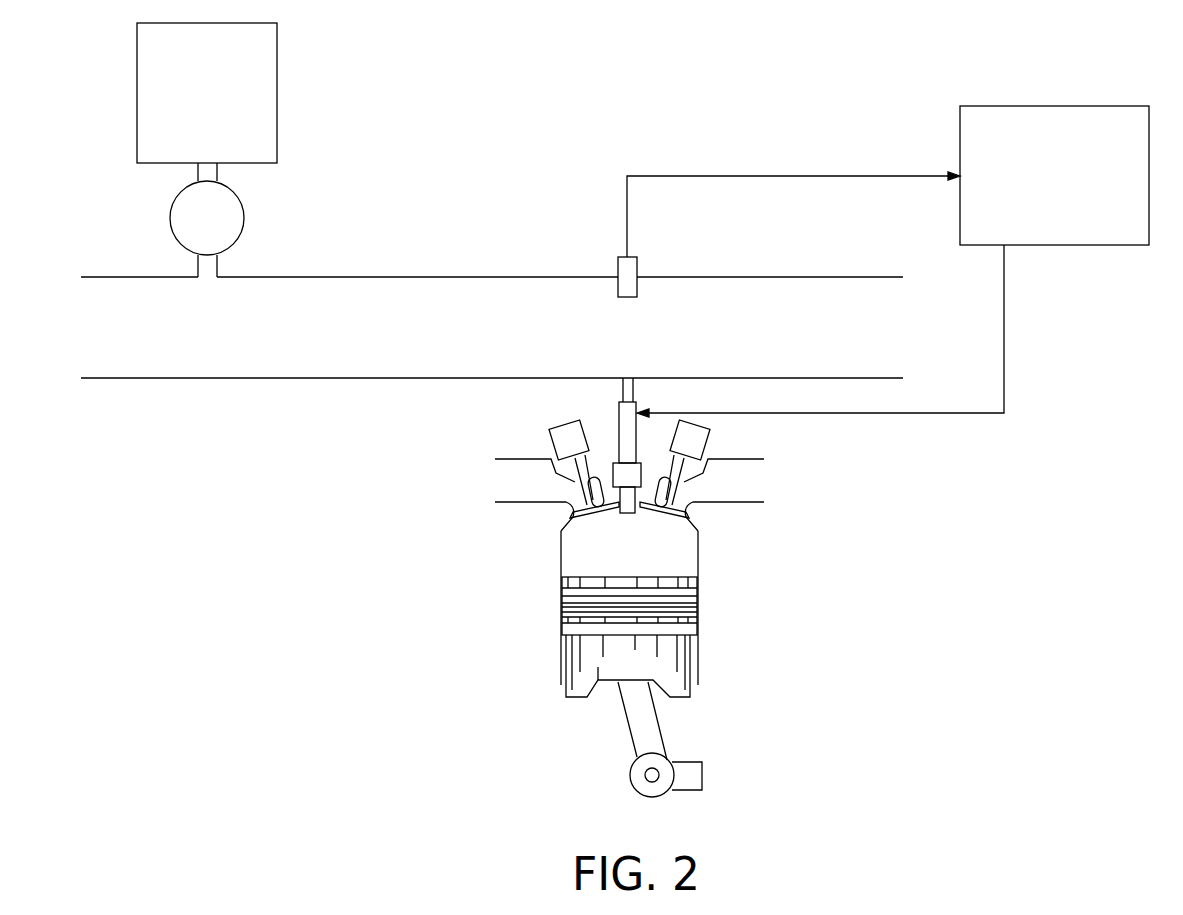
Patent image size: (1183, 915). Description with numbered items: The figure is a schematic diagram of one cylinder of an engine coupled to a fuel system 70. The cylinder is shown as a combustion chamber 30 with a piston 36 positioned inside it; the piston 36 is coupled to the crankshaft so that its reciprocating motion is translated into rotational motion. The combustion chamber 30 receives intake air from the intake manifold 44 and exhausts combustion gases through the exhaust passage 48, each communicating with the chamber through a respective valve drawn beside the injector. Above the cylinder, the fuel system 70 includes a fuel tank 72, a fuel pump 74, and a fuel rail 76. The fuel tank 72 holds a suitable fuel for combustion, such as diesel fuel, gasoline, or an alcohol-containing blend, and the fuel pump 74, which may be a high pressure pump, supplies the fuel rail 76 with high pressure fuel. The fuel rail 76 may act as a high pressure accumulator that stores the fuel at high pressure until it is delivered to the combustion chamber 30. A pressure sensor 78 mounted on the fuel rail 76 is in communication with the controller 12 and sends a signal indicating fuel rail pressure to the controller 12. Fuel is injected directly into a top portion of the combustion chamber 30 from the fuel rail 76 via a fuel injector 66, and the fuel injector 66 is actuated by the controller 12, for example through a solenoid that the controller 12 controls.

The fuel system 70 is at (557, 96).
The fuel tank 72 is at (195, 118).
The fuel pump 74 is at (195, 229).
The fuel rail 76 is at (378, 339).
The pressure sensor 78 is at (637, 270).
The controller 12 is at (1042, 201).
The fuel injector 66 is at (620, 428).
The exhaust passage 48 is at (507, 493).
The intake manifold 44 is at (724, 493).
The combustion chamber 30 is at (615, 556).
The piston 36 is at (598, 688).